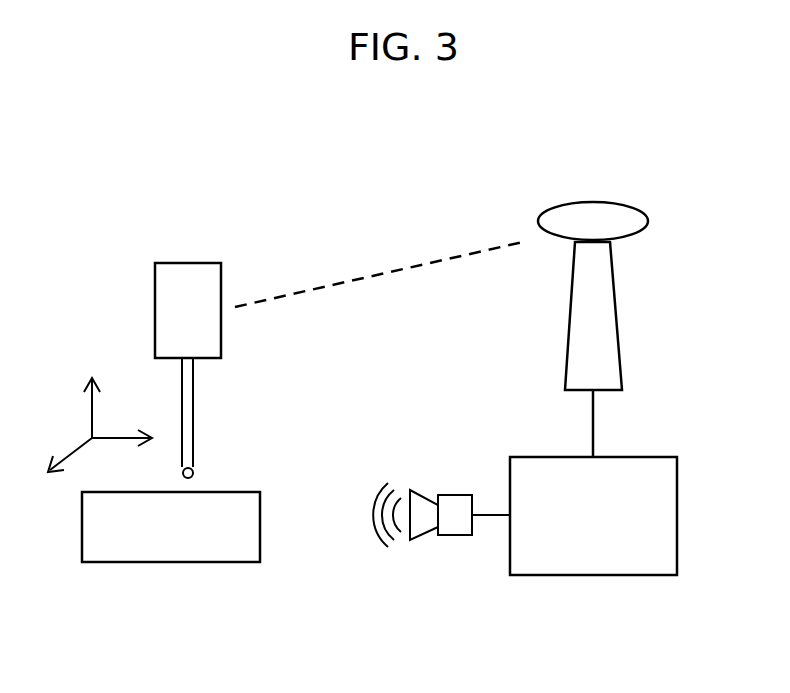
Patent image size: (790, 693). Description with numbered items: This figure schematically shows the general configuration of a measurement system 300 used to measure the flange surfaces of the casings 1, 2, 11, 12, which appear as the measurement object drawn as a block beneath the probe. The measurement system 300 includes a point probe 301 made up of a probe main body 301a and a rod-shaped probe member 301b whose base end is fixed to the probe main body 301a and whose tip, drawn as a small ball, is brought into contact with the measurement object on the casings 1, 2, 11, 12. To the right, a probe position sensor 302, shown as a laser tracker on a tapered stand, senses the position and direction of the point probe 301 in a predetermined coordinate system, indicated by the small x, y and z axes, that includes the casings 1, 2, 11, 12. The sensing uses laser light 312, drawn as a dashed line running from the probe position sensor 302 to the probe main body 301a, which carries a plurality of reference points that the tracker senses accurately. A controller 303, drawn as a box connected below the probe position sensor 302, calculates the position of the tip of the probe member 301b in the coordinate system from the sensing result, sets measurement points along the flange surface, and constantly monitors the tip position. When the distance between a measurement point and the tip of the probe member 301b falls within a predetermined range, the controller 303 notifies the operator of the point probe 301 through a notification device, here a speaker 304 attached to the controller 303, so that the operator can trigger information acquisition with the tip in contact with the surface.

The measurement system 300 is at (375, 202).
The point probe 301 is at (176, 333).
The probe main body 301a is at (167, 302).
The probe member 301b is at (190, 412).
The probe position sensor 302 is at (603, 338).
The controller 303 is at (590, 563).
The speaker 304 is at (440, 530).
The laser light 312 is at (360, 278).
The casing 1 is at (171, 587).
The casing 2 is at (171, 587).
The casing 11 is at (171, 587).
The casing 12 is at (163, 558).